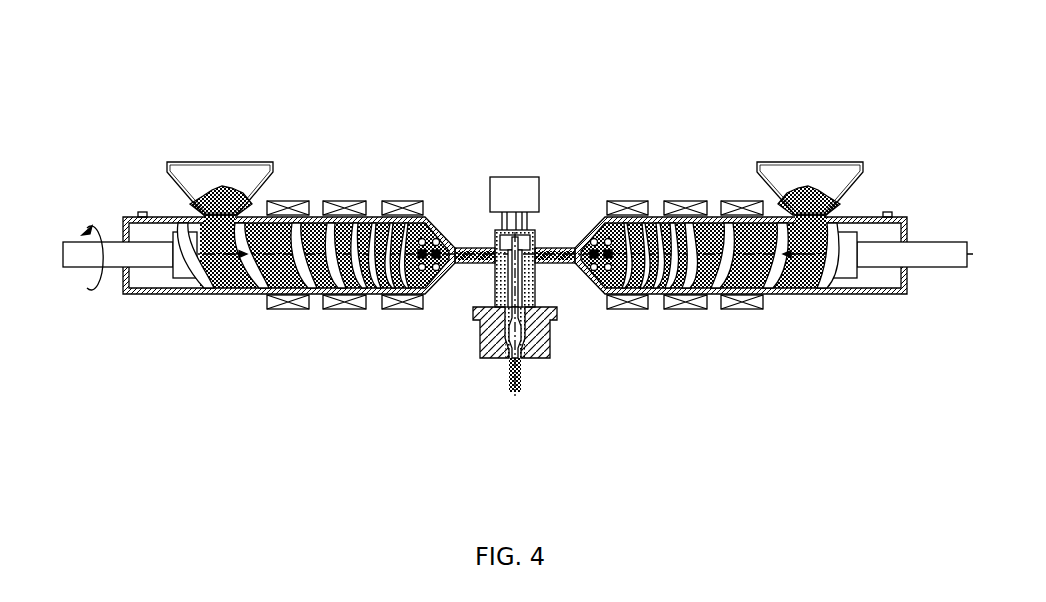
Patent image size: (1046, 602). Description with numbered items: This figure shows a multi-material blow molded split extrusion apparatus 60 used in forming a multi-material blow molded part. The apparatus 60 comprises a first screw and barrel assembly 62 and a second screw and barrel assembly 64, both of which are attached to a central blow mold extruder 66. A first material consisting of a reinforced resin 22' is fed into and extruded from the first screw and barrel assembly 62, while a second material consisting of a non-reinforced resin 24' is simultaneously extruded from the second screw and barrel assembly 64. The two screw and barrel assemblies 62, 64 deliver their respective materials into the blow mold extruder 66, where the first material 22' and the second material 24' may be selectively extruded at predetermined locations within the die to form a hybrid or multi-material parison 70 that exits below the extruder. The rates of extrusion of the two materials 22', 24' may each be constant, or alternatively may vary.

The multi-material blow molded split extrusion apparatus 60 is at (518, 227).
The reinforced resin 22' is at (215, 168).
The non-reinforced resin 24' is at (816, 166).
The first screw and barrel assembly 62 is at (279, 233).
The second screw and barrel assembly 64 is at (751, 231).
The blow mold extruder 66 is at (512, 177).
The multi-material parison 70 is at (520, 382).